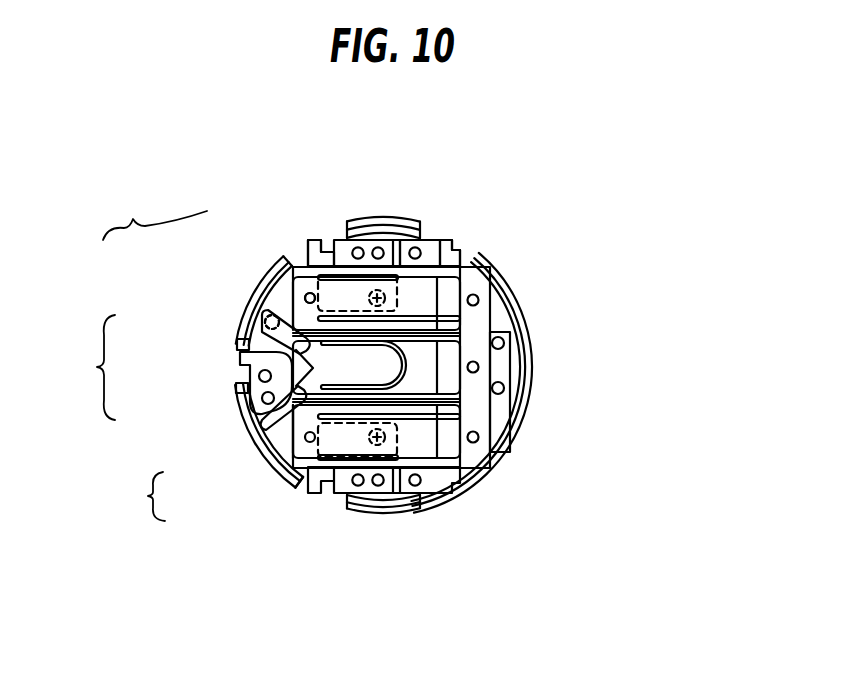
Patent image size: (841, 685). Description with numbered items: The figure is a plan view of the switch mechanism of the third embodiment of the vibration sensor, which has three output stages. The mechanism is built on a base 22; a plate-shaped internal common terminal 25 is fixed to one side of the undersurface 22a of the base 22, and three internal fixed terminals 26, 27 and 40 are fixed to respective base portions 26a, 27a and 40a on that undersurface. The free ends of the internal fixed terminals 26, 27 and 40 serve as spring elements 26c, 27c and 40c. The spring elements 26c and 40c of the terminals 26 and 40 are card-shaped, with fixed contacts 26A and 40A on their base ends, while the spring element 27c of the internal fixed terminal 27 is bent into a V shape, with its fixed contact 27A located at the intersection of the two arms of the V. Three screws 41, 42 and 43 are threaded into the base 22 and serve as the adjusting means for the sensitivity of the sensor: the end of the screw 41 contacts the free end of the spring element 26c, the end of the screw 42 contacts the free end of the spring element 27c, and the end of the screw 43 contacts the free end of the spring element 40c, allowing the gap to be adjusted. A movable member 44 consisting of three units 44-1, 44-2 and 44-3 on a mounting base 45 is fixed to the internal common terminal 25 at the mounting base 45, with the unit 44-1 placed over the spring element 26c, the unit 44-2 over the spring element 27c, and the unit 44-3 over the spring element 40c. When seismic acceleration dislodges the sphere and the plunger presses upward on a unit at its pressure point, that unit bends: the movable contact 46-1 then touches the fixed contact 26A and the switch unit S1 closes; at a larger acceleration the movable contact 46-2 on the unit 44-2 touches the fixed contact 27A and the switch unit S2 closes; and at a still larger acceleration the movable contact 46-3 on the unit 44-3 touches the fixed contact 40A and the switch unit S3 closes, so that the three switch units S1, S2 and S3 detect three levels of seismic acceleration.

The base 22 is at (505, 273).
The undersurface of base 22a is at (392, 238).
The internal common terminal 25 is at (440, 254).
The internal fixed terminal 26 is at (325, 245).
The base portion 26a is at (340, 240).
The fixed contact 26A is at (290, 292).
The spring element 26c is at (318, 277).
The internal fixed terminal 27 is at (240, 357).
The fixed contact 27A is at (262, 392).
The base portion 27a is at (305, 437).
The spring element 27c is at (266, 313).
The internal fixed terminal 40 is at (295, 490).
The base portion 40a is at (370, 492).
The fixed contact 40A is at (316, 440).
The spring element 40c is at (288, 494).
The screw 41 is at (392, 300).
The screw 42 is at (304, 298).
The screw 43 is at (394, 428).
The movable member 44 is at (462, 263).
The unit of movable member 44-1 is at (392, 300).
The unit of movable member 44-2 is at (362, 390).
The unit of movable member 44-3 is at (388, 437).
The mounting base 45 is at (480, 320).
The movable contact 46-1 is at (307, 294).
The movable contact 46-2 is at (300, 346).
The movable contact 46-3 is at (306, 478).
The switch unit S1 is at (155, 214).
The switch unit S2 is at (83, 367).
The switch unit S3 is at (141, 496).